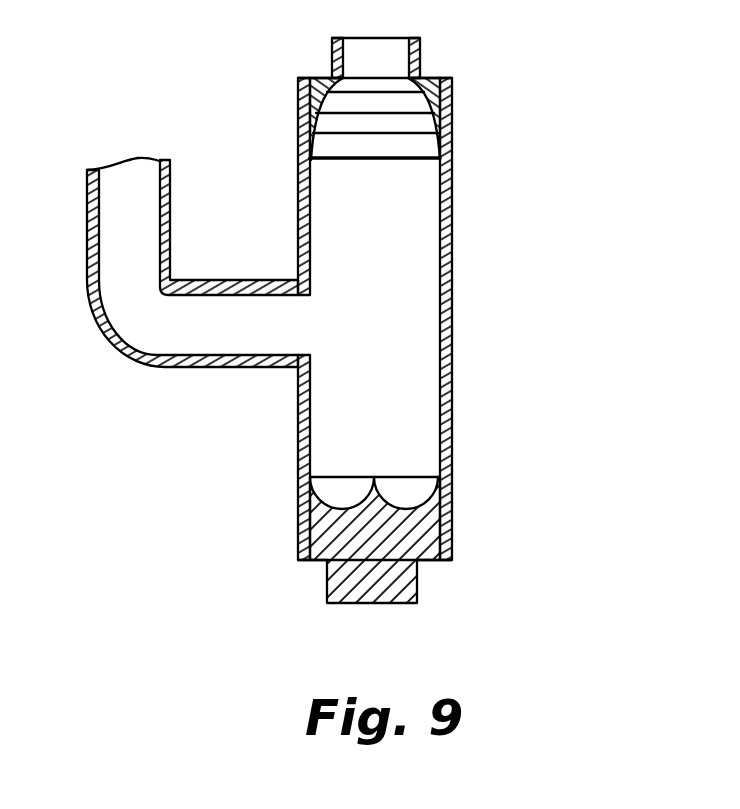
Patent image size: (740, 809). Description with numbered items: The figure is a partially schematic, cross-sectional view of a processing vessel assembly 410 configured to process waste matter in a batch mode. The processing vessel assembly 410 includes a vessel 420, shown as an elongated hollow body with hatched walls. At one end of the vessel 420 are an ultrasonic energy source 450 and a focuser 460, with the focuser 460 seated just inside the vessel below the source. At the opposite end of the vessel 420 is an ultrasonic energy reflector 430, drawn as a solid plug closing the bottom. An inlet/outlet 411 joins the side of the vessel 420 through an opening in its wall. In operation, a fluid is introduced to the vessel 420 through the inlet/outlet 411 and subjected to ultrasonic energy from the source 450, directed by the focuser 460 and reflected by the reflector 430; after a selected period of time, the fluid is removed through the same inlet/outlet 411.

The processing vessel assembly 410 is at (355, 307).
The inlet/outlet 411 is at (170, 213).
The vessel 420 is at (452, 295).
The ultrasonic energy reflector 430 is at (432, 518).
The ultrasonic energy source 450 is at (438, 60).
The focuser 460 is at (453, 93).